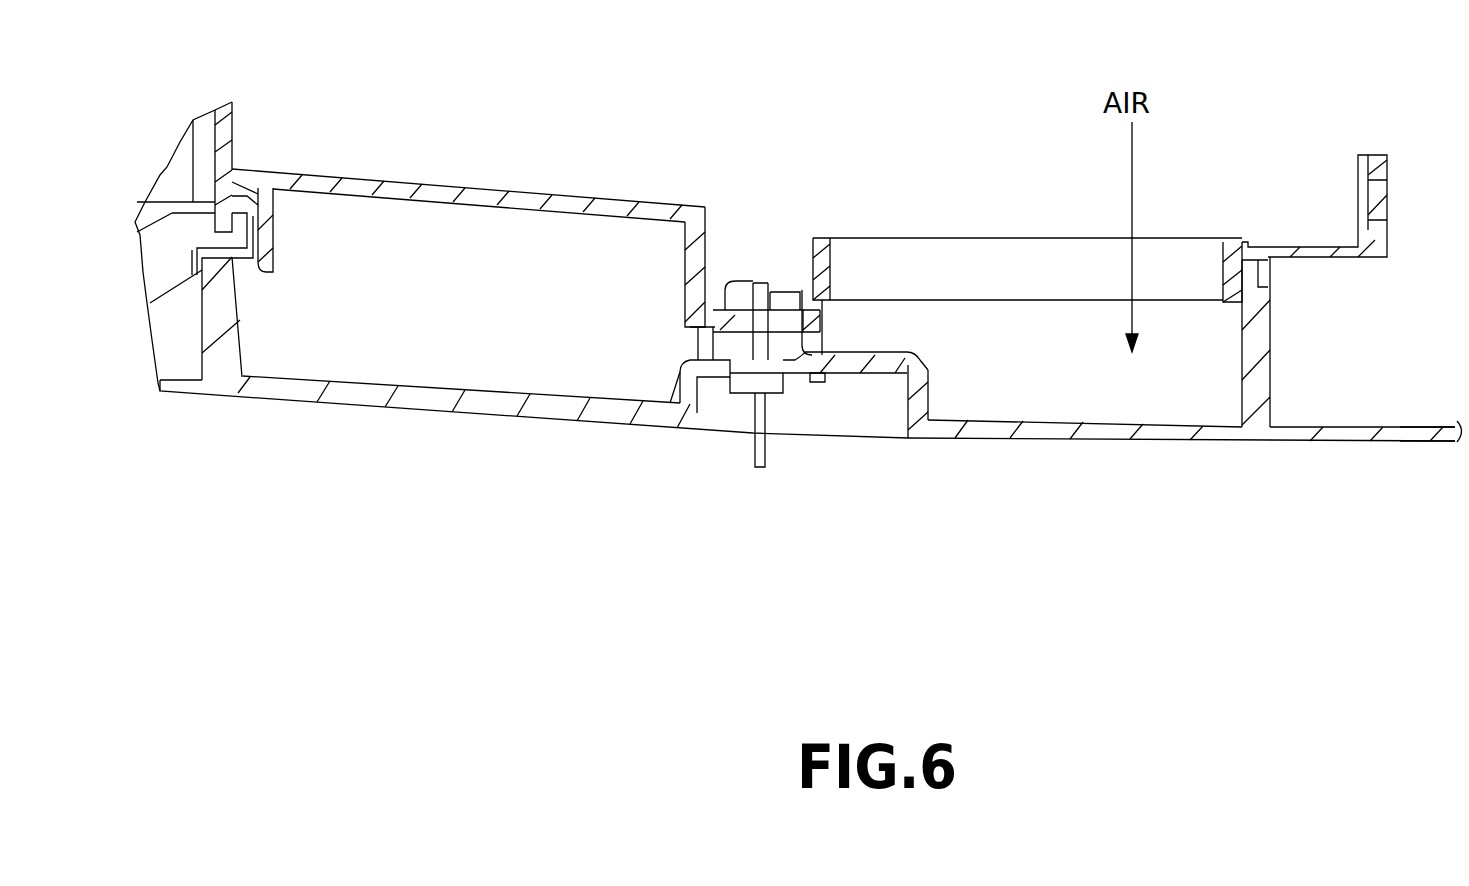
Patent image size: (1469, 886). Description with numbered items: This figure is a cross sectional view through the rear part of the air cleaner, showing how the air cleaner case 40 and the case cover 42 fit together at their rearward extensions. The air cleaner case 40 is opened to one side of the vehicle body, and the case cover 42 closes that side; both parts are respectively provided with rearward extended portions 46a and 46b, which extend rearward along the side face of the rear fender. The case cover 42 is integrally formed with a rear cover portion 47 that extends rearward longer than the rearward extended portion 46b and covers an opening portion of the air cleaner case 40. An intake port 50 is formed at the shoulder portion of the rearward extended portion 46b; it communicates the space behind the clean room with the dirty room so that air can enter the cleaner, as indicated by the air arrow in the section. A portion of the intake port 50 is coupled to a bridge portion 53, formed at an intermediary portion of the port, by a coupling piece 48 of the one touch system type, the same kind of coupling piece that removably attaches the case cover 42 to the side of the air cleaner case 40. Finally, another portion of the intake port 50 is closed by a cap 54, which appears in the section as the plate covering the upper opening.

The air cleaner case 40 is at (707, 237).
The case cover 42 is at (372, 387).
The rearward extended portion of the air cleaner case 46a is at (1240, 233).
The rearward extended portion of the case cover 46b is at (1112, 443).
The rear cover portion 47 is at (1367, 440).
The coupling piece 48 is at (735, 390).
The intake port 50 is at (960, 252).
The bridge portion 53 is at (715, 325).
The cap 54 is at (405, 183).